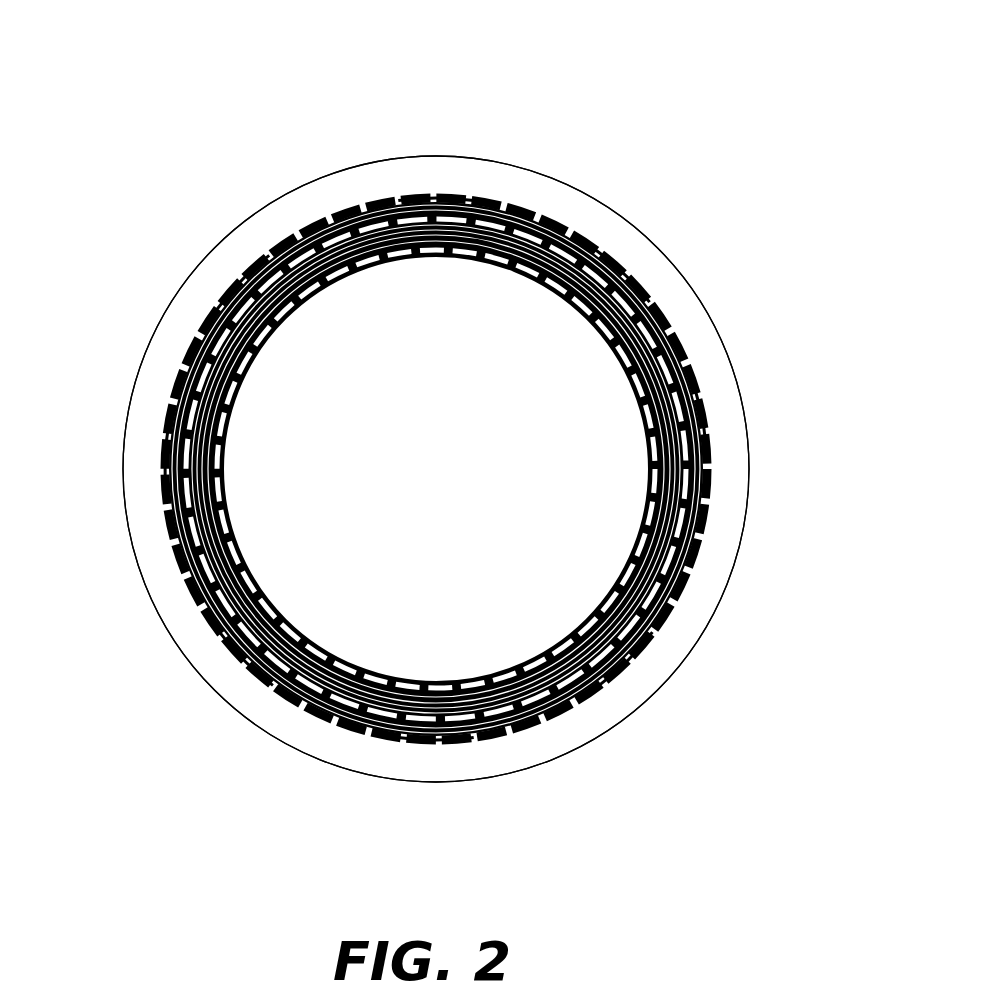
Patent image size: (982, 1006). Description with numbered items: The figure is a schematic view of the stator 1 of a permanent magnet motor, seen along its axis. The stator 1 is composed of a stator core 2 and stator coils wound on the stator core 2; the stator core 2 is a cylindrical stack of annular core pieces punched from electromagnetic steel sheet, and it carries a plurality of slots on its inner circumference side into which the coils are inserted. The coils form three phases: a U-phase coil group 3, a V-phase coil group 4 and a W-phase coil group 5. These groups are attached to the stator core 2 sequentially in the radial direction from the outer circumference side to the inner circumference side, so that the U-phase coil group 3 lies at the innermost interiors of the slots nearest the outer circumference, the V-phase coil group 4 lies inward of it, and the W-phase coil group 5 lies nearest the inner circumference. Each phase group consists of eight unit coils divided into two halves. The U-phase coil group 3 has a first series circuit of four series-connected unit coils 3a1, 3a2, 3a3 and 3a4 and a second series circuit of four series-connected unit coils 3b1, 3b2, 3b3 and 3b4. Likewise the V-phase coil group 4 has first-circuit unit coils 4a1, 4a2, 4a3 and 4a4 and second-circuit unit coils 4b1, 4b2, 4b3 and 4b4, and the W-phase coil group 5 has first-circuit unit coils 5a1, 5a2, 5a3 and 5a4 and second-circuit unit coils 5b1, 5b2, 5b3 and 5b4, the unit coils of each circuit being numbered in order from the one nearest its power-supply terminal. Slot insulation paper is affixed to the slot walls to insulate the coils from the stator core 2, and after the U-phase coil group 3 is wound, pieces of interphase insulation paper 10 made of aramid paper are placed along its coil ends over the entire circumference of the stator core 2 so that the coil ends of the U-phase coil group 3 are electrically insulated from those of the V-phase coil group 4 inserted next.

The stator 1 is at (573, 100).
The stator core 2 is at (487, 177).
The U-phase coil group 3 is at (537, 212).
The unit coil 3a1 is at (197, 333).
The unit coil 3a2 is at (163, 503).
The unit coil 3a3 is at (333, 727).
The unit coil 3a4 is at (543, 727).
The unit coil 3b1 is at (330, 213).
The unit coil 3b2 is at (573, 227).
The unit coil 3b3 is at (667, 310).
The unit coil 3b4 is at (673, 608).
The V-phase coil group 4 is at (680, 343).
The unit coil 4a1 is at (245, 283).
The unit coil 4a2 is at (222, 462).
The unit coil 4a3 is at (247, 657).
The unit coil 4a4 is at (435, 740).
The unit coil 4b1 is at (433, 200).
The unit coil 4b2 is at (623, 273).
The unit coil 4b3 is at (705, 405).
The unit coil 4b4 is at (623, 657).
The W-phase coil group 5 is at (590, 613).
The unit coil 5a1 is at (445, 248).
The unit coil 5a2 is at (257, 348).
The unit coil 5a3 is at (240, 560).
The unit coil 5a4 is at (335, 673).
The unit coil 5b1 is at (590, 297).
The unit coil 5b2 is at (657, 452).
The unit coil 5b3 is at (638, 550).
The unit coil 5b4 is at (468, 664).
The interphase insulation paper 10 is at (593, 247).